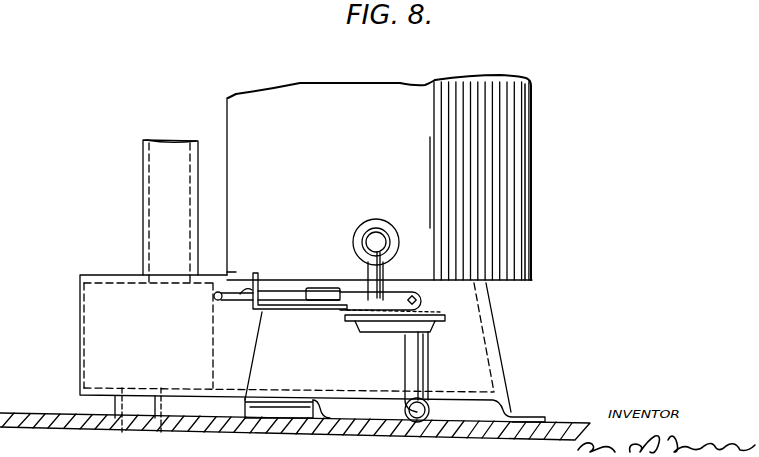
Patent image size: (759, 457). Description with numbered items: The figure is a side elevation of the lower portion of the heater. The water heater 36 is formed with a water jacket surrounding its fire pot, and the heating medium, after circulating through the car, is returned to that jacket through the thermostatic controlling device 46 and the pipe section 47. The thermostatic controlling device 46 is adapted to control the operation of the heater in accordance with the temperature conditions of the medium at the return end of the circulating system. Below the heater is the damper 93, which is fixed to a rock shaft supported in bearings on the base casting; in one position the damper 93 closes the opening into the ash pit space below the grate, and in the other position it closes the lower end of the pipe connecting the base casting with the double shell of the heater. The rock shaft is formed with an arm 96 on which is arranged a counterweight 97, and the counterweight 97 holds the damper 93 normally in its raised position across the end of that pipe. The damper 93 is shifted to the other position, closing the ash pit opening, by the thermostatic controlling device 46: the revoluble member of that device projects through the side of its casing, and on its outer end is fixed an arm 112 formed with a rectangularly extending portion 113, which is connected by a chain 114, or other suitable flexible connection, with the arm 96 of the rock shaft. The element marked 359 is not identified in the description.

The water heater 36 is at (493, 162).
The pipe section 47 is at (380, 252).
The chain 114 is at (241, 290).
The rectangularly extending portion 113 is at (262, 275).
The counterweight 97 is at (312, 290).
The arm 96 is at (247, 300).
The arm 112 is at (302, 315).
The damper 93 is at (213, 333).
The thermostatic controlling device 46 is at (385, 332).
The vertical rod 359 is at (430, 375).